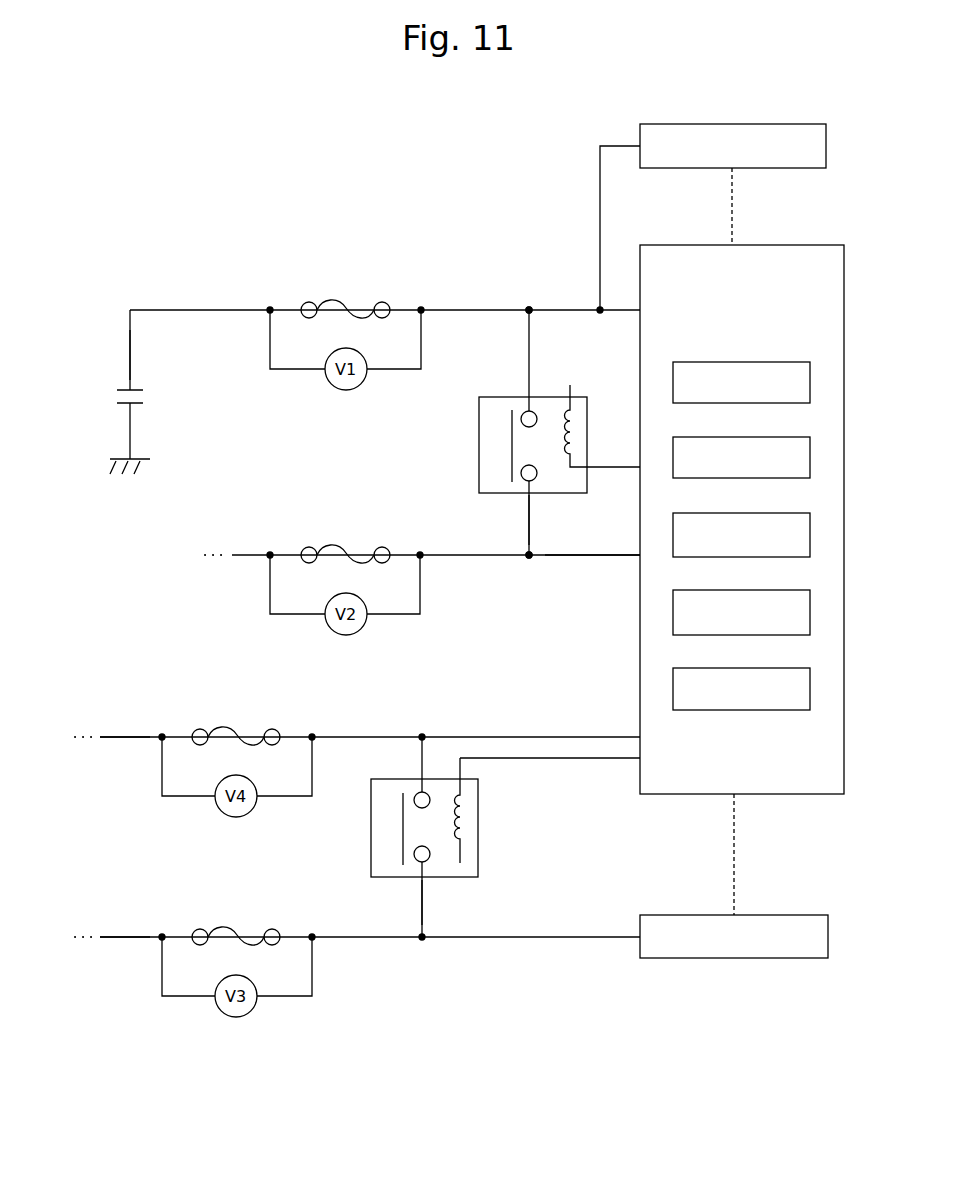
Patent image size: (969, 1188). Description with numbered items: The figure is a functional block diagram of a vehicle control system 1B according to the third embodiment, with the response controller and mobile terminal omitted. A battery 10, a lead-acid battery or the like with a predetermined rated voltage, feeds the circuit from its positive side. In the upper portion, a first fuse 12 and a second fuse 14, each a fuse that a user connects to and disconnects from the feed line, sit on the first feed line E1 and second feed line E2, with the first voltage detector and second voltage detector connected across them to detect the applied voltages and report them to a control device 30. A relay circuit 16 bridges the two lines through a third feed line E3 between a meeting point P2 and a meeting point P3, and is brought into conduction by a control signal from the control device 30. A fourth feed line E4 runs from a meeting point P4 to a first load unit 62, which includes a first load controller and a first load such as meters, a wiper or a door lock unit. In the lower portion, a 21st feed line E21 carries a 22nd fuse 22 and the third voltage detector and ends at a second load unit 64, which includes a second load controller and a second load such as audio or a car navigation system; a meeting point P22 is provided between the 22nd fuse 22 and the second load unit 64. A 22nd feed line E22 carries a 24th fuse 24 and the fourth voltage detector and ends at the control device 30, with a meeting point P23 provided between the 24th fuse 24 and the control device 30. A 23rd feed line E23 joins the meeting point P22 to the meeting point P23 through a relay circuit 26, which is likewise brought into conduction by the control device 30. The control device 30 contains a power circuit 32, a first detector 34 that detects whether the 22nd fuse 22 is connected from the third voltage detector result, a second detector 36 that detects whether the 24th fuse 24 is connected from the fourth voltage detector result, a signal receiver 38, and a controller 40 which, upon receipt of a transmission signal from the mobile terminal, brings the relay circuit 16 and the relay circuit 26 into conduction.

The vehicle control system 1B is at (194, 174).
The battery 10 is at (104, 397).
The first fuse 12 is at (351, 283).
The second fuse 14 is at (351, 528).
The relay circuit 16 is at (480, 428).
The 22nd fuse 22 is at (242, 915).
The 24th fuse 24 is at (242, 715).
The relay circuit 26 is at (371, 814).
The control device 30 is at (792, 245).
The power circuit 32 is at (765, 362).
The first detector 34 is at (765, 437).
The second detector 36 is at (765, 513).
The signal receiver 38 is at (765, 590).
The controller 40 is at (765, 668).
The first load unit 62 is at (780, 124).
The second load unit 64 is at (781, 915).
The first feed line E1 is at (128, 353).
The second feed line E2 is at (592, 560).
The third feed line E3 is at (527, 519).
The fourth feed line E4 is at (600, 193).
The 21st feed line E21 is at (128, 942).
The 22nd feed line E22 is at (128, 742).
The 23rd feed line E23 is at (419, 903).
The meeting point P2 is at (529, 308).
The meeting point P3 is at (529, 562).
The meeting point P4 is at (600, 316).
The meeting point P22 is at (422, 943).
The meeting point P23 is at (422, 735).